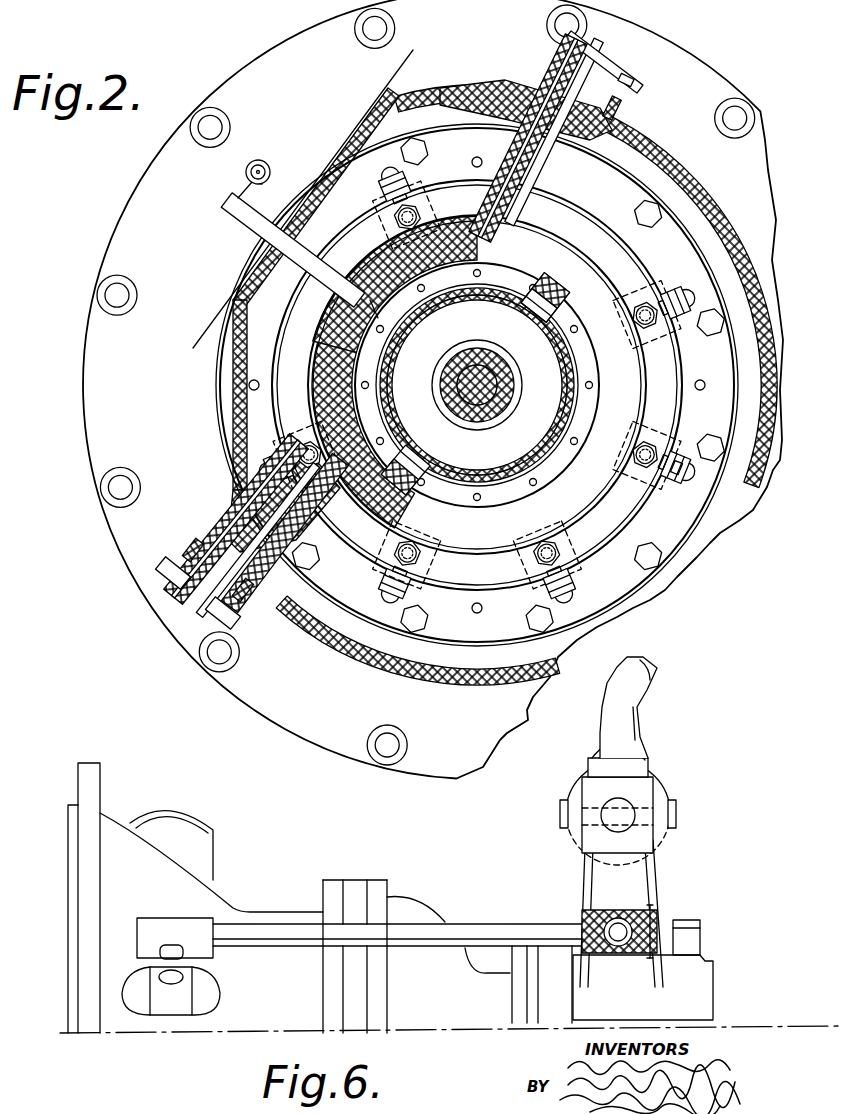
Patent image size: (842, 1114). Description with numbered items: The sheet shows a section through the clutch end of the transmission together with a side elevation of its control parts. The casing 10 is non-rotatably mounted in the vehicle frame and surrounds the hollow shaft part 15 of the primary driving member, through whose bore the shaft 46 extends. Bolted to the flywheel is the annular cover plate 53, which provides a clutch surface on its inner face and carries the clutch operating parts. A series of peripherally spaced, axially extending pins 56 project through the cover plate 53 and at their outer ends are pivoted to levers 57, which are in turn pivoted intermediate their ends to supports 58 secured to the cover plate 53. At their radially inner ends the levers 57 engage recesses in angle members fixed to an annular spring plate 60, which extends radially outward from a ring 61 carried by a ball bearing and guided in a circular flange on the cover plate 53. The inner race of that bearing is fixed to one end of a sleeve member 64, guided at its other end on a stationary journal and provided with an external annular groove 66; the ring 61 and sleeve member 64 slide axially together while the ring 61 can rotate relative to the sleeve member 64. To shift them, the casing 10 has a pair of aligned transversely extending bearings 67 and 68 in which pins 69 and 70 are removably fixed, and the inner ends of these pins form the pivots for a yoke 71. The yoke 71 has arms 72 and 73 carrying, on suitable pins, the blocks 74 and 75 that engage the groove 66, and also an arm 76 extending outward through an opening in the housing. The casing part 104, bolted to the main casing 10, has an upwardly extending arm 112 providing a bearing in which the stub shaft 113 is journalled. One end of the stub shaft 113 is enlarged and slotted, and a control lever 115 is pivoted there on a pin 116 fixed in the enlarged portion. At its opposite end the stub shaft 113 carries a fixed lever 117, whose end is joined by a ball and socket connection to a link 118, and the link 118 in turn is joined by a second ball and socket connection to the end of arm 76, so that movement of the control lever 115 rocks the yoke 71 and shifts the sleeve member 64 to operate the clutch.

In FIG. 2, the casing 10 is at (693, 190).
In FIG. 6, the casing 10 is at (230, 908).
In FIG. 2, the hollow shaft part 15 is at (490, 412).
In FIG. 2, the shaft 46 is at (490, 375).
In FIG. 2, the annular cover plate 53 is at (687, 355).
In FIG. 2, the pins 56 is at (680, 480).
In FIG. 2, the levers 57 is at (664, 480).
In FIG. 2, the supports 58 is at (666, 452).
In FIG. 2, the annular spring plate 60 is at (628, 253).
In FIG. 2, the ring 61 is at (594, 400).
In FIG. 2, the sleeve member 64 is at (566, 392).
In FIG. 2, the external annular groove 66 is at (472, 290).
In FIG. 2, the bearing 67 is at (497, 166).
In FIG. 2, the bearing 68 is at (318, 492).
In FIG. 2, the pin 69 is at (549, 108).
In FIG. 2, the pin 70 is at (241, 506).
In FIG. 2, the yoke 71 is at (338, 368).
In FIG. 2, the arm 72 is at (540, 278).
In FIG. 2, the arm 73 is at (375, 485).
In FIG. 2, the block 74 is at (563, 294).
In FIG. 2, the block 75 is at (418, 500).
In FIG. 2, the arm 76 is at (264, 230).
In FIG. 6, the arm 76 is at (176, 1010).
In FIG. 6, the casing part 104 is at (700, 976).
In FIG. 6, the upwardly extending arm 112 is at (582, 873).
In FIG. 6, the stub shaft 113 is at (618, 803).
In FIG. 6, the control lever 115 is at (628, 715).
In FIG. 6, the pin 116 is at (680, 815).
In FIG. 6, the lever 117 is at (630, 892).
In FIG. 2, the link 118 is at (264, 162).
In FIG. 6, the link 118 is at (494, 928).